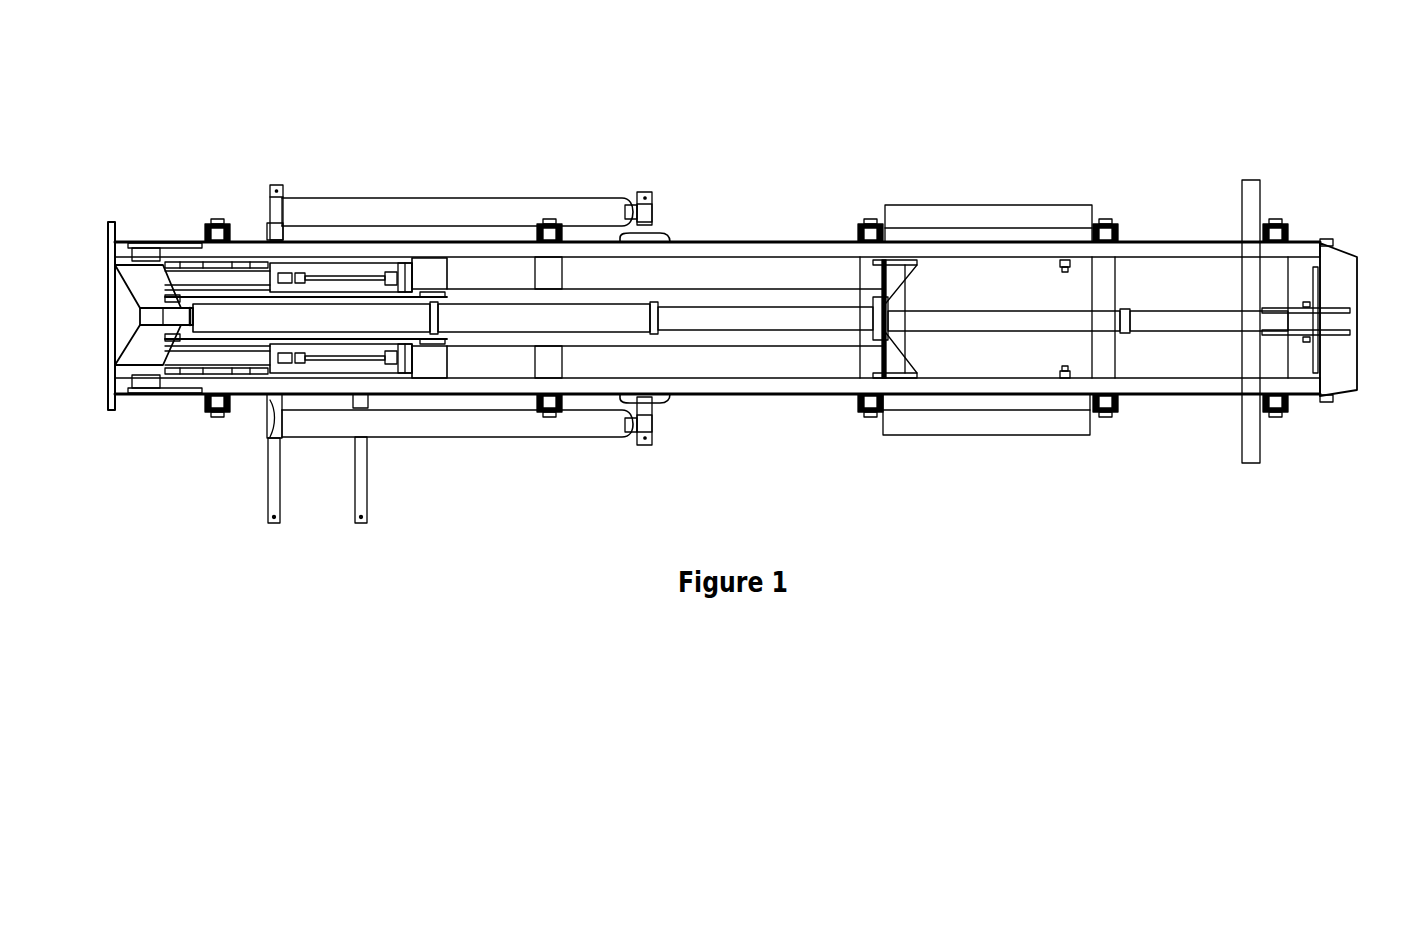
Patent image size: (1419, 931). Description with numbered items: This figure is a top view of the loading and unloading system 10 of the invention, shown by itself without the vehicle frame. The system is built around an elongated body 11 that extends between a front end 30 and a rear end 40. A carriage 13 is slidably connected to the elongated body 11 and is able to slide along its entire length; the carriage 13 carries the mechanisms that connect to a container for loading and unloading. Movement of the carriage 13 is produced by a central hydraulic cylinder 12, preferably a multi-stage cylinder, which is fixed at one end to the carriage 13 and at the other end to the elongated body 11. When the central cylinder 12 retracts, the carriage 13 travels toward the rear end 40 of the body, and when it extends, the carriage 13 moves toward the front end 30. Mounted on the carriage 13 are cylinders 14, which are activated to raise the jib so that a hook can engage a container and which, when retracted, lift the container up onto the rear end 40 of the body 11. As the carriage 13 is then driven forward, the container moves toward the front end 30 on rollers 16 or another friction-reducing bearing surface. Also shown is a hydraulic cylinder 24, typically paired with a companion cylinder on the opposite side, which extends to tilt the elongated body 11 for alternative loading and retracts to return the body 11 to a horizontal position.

The system 10 is at (713, 95).
The elongated body 11 is at (1160, 250).
The central hydraulic cylinder 12 is at (727, 317).
The carriage 13 is at (428, 353).
The cylinders 14 is at (331, 268).
The rollers 16 is at (1113, 405).
The hydraulic cylinder 24 is at (475, 212).
The front end 30 is at (63, 328).
The rear end 40 is at (1413, 334).